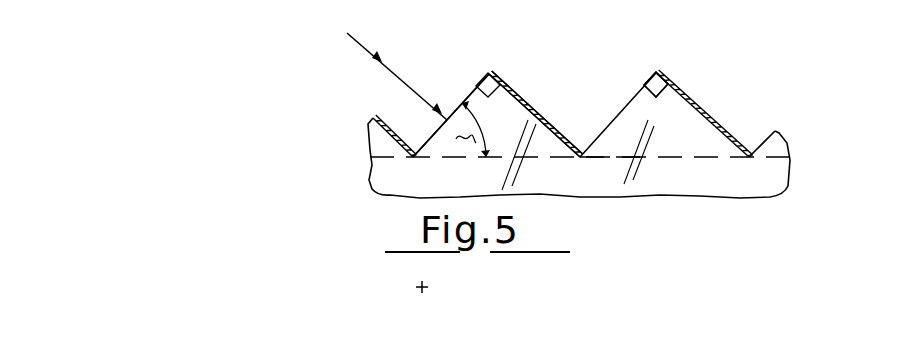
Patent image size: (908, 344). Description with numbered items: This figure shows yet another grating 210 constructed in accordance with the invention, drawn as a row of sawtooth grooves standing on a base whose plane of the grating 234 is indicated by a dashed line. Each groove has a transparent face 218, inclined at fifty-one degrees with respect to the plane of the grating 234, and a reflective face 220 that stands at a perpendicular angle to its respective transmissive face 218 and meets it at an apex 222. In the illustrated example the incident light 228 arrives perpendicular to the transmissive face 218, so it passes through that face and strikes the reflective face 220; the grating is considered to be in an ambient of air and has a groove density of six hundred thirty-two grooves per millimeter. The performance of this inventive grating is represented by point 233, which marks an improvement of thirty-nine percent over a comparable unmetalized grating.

The retroreflective prism sheeting 210 is at (738, 88).
The transparent face 218 is at (468, 96).
The reflective face 220 is at (528, 102).
The prism apex 222 is at (656, 97).
The incident light ray 228 is at (360, 45).
The point 233 is at (418, 289).
The plane of the grating 234 is at (600, 157).